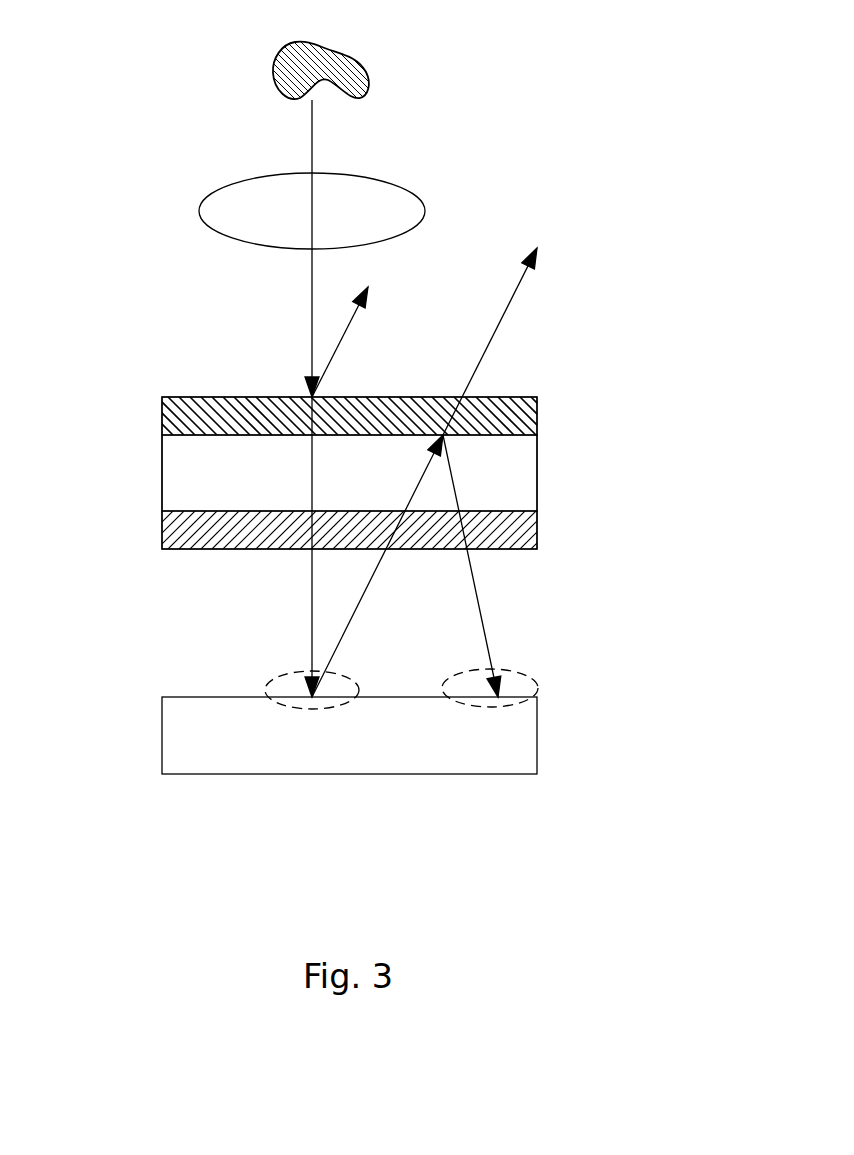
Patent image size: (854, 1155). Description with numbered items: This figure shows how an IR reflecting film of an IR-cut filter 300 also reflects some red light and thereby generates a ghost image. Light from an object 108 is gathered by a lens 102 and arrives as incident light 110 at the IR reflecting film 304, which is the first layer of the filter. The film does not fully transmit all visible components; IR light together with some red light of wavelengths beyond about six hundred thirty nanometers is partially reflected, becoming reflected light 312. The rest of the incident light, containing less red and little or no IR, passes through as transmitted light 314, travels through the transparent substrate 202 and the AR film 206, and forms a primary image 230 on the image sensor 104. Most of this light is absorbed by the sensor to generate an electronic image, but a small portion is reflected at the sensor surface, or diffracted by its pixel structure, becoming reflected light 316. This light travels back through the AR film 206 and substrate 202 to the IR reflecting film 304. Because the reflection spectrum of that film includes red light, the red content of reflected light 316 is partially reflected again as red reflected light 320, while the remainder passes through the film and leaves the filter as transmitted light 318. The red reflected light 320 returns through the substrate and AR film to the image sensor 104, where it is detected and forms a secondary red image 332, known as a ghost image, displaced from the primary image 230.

The object 108 is at (363, 67).
The lens 102 is at (267, 223).
The incident light 110 is at (310, 350).
The reflected light 312 is at (342, 342).
The transmitted light 318 is at (495, 348).
The IR-cut filter 300 is at (540, 475).
The IR reflecting film 304 is at (162, 415).
The transparent substrate 202 is at (162, 473).
The AR film 206 is at (162, 530).
The transmitted light 314 is at (310, 648).
The reflected light 316 is at (369, 583).
The red reflected light 320 is at (483, 617).
The image sensor 104 is at (220, 752).
The primary image 230 is at (332, 705).
The secondary red image 332 is at (472, 707).